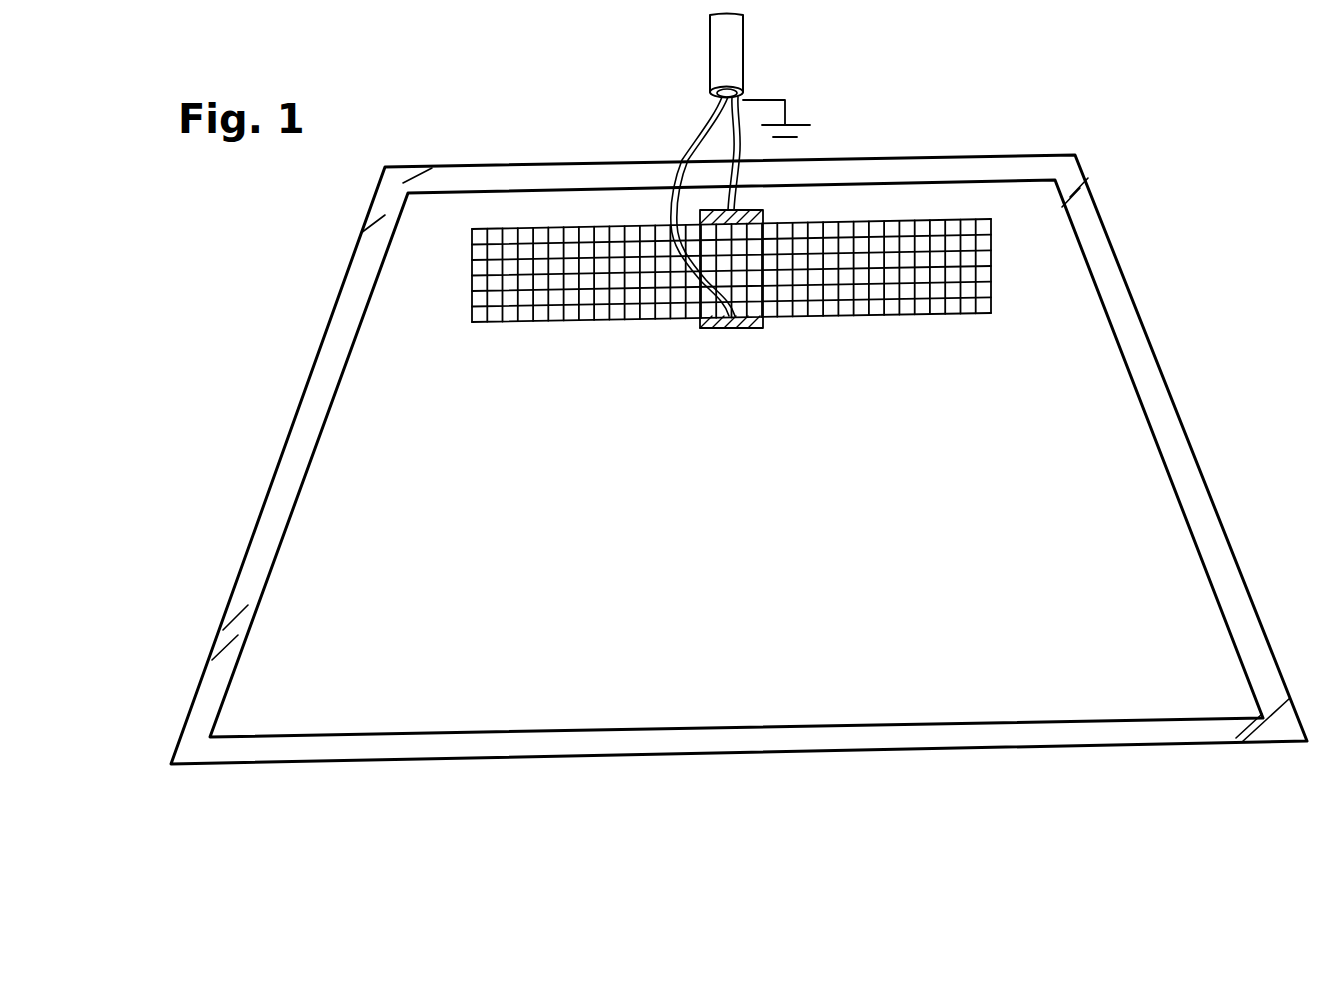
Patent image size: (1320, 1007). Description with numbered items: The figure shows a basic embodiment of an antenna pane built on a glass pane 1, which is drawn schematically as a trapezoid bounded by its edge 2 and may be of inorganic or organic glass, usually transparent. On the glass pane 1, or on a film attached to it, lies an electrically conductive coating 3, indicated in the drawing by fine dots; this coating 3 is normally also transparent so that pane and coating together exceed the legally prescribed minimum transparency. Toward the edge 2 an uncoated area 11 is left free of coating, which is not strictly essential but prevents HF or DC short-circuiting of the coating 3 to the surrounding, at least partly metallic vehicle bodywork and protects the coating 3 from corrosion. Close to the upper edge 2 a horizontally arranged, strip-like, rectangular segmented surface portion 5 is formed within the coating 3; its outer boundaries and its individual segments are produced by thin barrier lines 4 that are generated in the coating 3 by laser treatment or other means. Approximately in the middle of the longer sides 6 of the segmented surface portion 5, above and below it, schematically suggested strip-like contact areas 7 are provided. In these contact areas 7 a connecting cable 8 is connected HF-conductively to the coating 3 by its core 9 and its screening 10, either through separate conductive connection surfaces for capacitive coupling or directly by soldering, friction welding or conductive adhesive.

The glass pane 1 is at (739, 506).
The edge 2 is at (1213, 748).
The electrically conductive coating 3 is at (1163, 538).
The barrier lines 4 is at (993, 237).
The segmented surface portion 5 is at (848, 223).
The longer sides 6 is at (892, 232).
The contact areas 7 is at (712, 212).
The connecting cable 8 is at (735, 32).
The core 9 is at (717, 125).
The screening 10 is at (733, 155).
The uncoated area 11 is at (1103, 278).